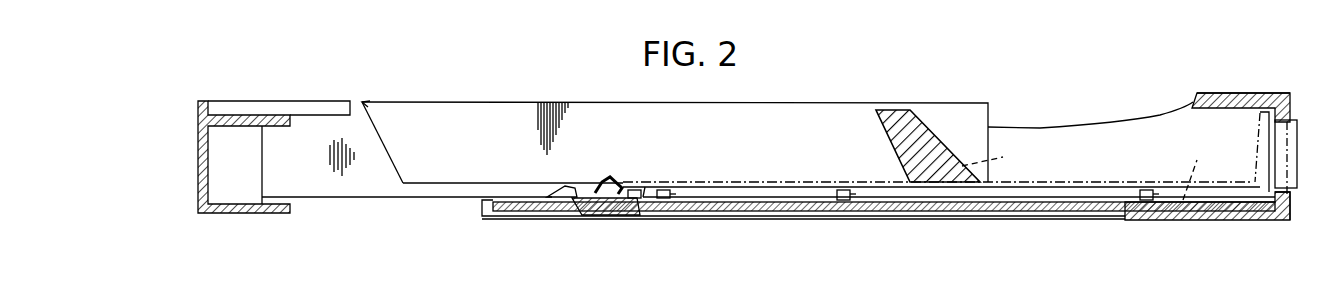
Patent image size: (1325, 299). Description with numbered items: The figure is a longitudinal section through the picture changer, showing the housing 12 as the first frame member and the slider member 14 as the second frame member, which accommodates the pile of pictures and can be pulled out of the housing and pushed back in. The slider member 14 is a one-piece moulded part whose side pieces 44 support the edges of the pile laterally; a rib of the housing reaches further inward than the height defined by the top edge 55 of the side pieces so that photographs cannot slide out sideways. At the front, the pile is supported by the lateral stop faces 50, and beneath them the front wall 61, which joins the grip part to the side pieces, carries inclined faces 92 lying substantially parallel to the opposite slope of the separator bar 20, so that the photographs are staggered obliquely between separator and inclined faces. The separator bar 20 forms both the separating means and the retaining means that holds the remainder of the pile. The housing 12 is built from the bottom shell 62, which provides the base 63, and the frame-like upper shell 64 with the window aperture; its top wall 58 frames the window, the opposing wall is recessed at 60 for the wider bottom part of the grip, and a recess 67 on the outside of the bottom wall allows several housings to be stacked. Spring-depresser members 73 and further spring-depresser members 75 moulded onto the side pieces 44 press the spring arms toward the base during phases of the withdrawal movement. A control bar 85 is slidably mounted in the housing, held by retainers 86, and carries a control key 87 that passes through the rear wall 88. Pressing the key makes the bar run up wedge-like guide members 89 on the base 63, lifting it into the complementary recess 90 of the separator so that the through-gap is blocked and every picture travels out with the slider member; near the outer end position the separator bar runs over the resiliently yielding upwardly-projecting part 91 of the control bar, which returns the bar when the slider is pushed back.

The housing 12 is at (1232, 92).
The slider member 14 is at (343, 201).
The separator bar 20 is at (882, 112).
The side pieces 44 is at (418, 115).
The lateral stop faces 50 is at (365, 104).
The top edge 55 is at (516, 100).
The top wall 58 is at (1258, 93).
The recess 60 is at (527, 216).
The front wall 61 is at (198, 180).
The bottom shell 62 is at (1222, 214).
The base 63 is at (855, 212).
The upper shell 64 is at (1190, 102).
The recess 67 is at (714, 211).
The spring-depresser members 73 is at (898, 188).
The spring-depresser members 75 is at (537, 190).
The control bar 85 is at (773, 190).
The retainers 86 is at (664, 189).
The control key 87 is at (1293, 195).
The rear wall 88 is at (1292, 112).
The wedge-like guide members 89 is at (636, 189).
The recess 90 is at (996, 153).
The upwardly-projecting part 91 is at (606, 178).
The inclined faces 92 is at (390, 150).